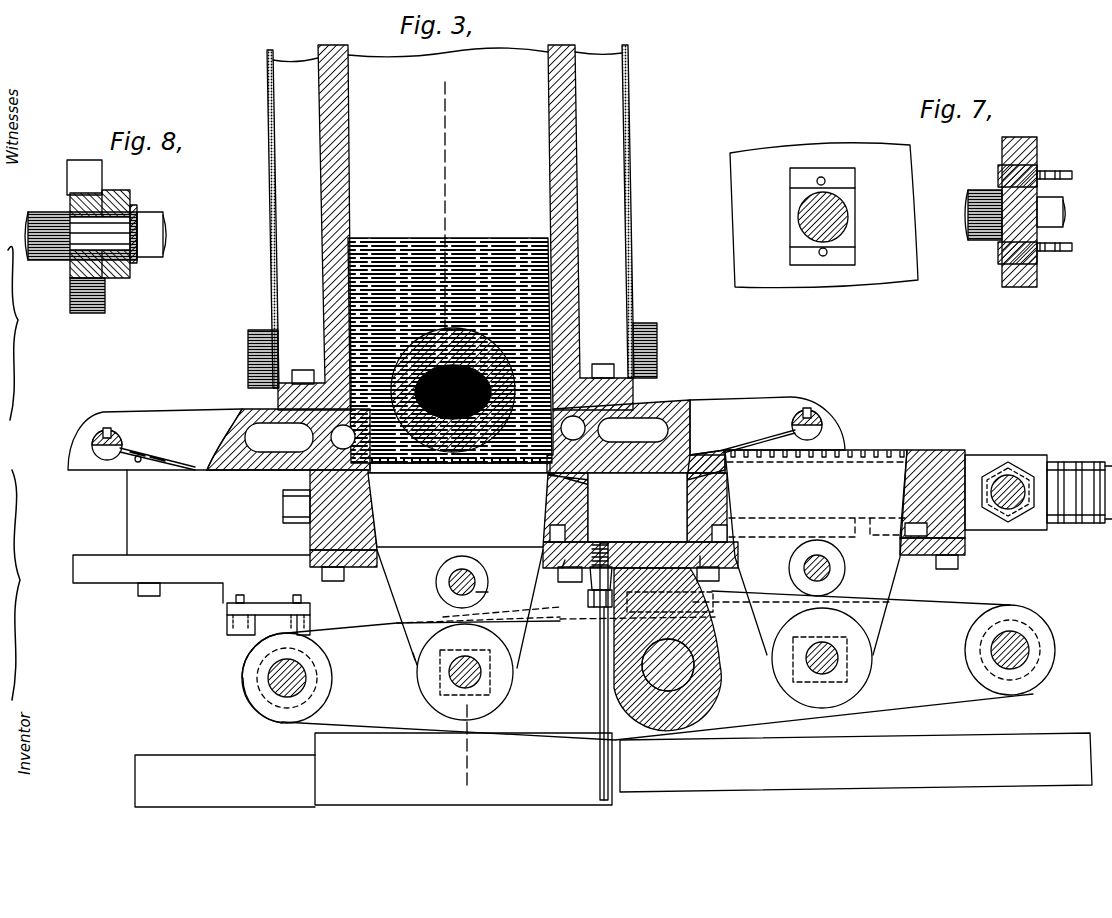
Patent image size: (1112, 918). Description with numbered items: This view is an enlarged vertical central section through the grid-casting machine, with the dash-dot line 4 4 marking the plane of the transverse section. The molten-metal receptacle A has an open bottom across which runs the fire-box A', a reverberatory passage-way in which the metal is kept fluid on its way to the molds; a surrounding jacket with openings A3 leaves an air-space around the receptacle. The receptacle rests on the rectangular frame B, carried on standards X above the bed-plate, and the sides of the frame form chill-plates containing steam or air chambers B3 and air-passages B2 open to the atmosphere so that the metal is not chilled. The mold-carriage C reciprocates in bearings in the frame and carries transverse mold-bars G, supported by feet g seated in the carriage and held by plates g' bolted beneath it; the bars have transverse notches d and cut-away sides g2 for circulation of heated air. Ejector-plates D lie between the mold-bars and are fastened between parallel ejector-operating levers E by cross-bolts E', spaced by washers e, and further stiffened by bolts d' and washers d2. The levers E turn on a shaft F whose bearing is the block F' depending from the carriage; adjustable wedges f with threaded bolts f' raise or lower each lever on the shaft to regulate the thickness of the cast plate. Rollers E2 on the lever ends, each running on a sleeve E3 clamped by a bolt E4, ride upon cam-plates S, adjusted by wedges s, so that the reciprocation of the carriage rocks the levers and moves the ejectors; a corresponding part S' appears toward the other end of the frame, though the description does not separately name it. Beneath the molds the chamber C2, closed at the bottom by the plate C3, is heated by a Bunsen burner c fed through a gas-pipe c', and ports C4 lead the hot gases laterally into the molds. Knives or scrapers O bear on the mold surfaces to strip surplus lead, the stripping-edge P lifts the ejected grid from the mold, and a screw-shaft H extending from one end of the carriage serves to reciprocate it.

In FIG. 3, the molten-metal receptacle A is at (450, 254).
In FIG. 3, the fire-box A' is at (453, 390).
In FIG. 3, the jacket openings A3 is at (668, 336).
In FIG. 3, the section line 4 is at (456, 432).
In FIG. 3, the mold-carriage frame B is at (456, 500).
In FIG. 3, the air-passages B2 is at (458, 432).
In FIG. 3, the chamber B3 is at (456, 435).
In FIG. 3, the mold-carriage C is at (292, 512).
In FIG. 3, the chamber C2 is at (637, 507).
In FIG. 3, the plate C3 is at (640, 552).
In FIG. 3, the ports C4 is at (585, 482).
In FIG. 3, the ejector-plates D is at (642, 559).
In FIG. 3, the transverse notches d is at (460, 478).
In FIG. 3, the bolts d' is at (640, 574).
In FIG. 3, the washers d2 is at (490, 592).
In FIG. 3, the ejector-operating levers E is at (637, 671).
In FIG. 8, the ejector-operating levers E is at (70, 236).
In FIG. 7, the ejector-operating levers E is at (883, 212).
In FIG. 3, the cross-bolts E' is at (644, 664).
In FIG. 3, the rollers E2 is at (1034, 606).
In FIG. 8, the rollers E2 is at (116, 194).
In FIG. 8, the sleeve E3 is at (137, 208).
In FIG. 8, the clamp-bolt E4 is at (163, 234).
In FIG. 3, the spacing-washers e is at (417, 648).
In FIG. 3, the shaft F is at (676, 649).
In FIG. 7, the shaft F is at (931, 216).
In FIG. 3, the bearing block F' is at (683, 682).
In FIG. 7, the adjustable wedges f is at (903, 216).
In FIG. 7, the threaded bolts f' is at (942, 216).
In FIG. 3, the mold-bars G is at (458, 510).
In FIG. 3, the lugs or feet g is at (737, 545).
In FIG. 3, the retaining plates g' is at (648, 568).
In FIG. 3, the cut-away portions g2 is at (524, 510).
In FIG. 3, the screw-shaft H is at (1070, 460).
In FIG. 3, the knives or scrapers O is at (150, 452).
In FIG. 3, the stripping-edge P is at (203, 462).
In FIG. 3, the cam-plates S is at (266, 626).
In FIG. 3, the wedges s is at (236, 608).
In FIG. 3, the stop bracket S' is at (681, 606).
In FIG. 3, the standards X is at (613, 770).
In FIG. 3, the Bunsen burner c is at (586, 587).
In FIG. 3, the gas-pipe c' is at (590, 671).